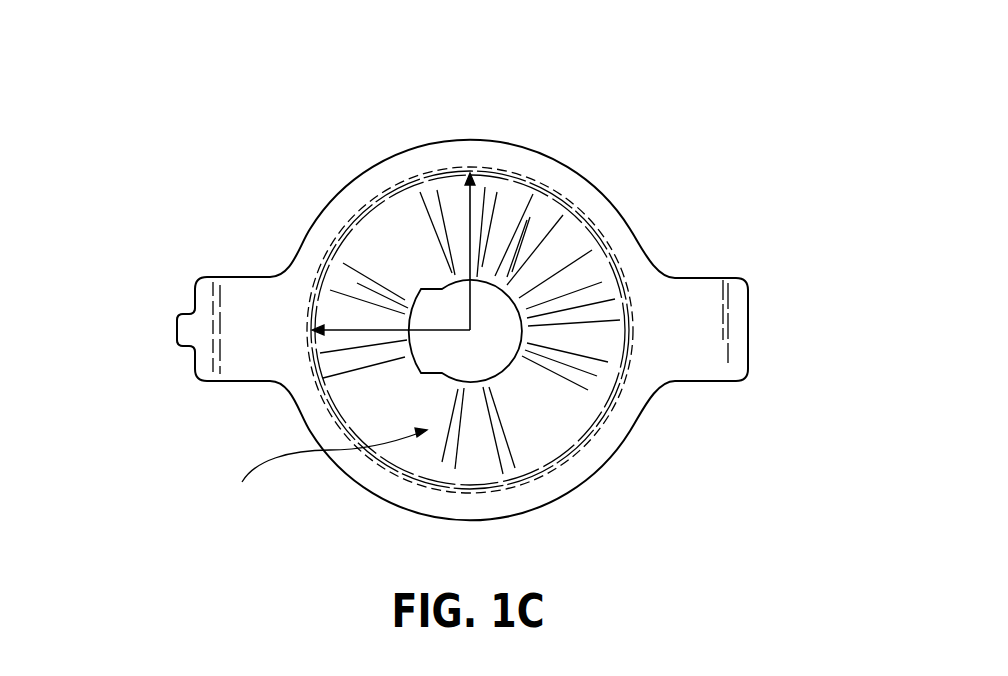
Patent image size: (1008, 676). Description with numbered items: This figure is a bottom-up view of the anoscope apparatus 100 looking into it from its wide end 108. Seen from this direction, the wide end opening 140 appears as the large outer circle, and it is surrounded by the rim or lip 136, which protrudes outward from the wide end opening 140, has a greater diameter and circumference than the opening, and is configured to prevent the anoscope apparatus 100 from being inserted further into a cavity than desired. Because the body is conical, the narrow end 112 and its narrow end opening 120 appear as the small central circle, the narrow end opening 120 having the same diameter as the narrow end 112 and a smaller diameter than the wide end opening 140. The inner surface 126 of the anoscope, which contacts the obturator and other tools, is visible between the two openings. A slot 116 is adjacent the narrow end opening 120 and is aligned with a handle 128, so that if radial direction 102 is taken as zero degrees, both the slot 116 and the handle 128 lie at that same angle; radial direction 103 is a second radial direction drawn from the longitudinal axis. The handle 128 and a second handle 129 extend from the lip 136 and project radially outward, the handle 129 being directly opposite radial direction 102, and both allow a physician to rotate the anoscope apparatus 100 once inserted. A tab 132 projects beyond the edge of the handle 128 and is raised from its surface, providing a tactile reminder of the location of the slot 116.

The anoscope apparatus 100 is at (170, 70).
The radial direction 102 is at (437, 337).
The radial direction 103 is at (468, 212).
The wide end 108 is at (528, 215).
The narrow end 112 is at (491, 318).
The slot 116 is at (317, 377).
The narrow end opening 120 is at (463, 322).
The inner surface 126 is at (548, 433).
The handle 128 is at (207, 363).
The handle 129 is at (716, 296).
The tab 132 is at (173, 330).
The lip 136 is at (382, 487).
The wide end opening 140 is at (322, 468).